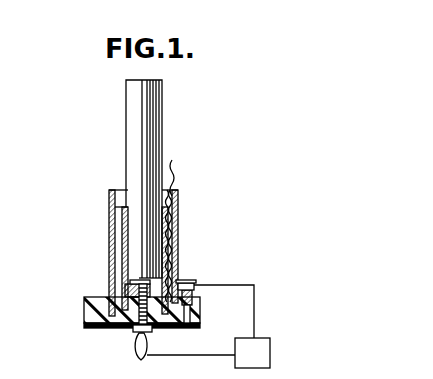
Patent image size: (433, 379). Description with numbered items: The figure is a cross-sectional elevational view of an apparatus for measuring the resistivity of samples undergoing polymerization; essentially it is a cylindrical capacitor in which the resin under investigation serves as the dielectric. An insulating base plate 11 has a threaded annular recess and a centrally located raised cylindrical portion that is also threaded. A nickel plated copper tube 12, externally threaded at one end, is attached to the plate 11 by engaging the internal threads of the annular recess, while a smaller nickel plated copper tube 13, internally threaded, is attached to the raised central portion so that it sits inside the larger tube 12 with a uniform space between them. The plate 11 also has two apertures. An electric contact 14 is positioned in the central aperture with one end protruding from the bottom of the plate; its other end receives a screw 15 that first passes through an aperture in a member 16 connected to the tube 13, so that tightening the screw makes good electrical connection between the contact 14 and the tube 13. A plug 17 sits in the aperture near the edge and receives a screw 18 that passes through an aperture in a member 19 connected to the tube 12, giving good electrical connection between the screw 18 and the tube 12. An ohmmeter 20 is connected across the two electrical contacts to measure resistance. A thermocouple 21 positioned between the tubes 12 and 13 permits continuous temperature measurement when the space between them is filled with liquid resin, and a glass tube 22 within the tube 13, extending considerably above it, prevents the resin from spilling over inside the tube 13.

The insulating base plate 11 is at (84, 305).
The nickel plated copper tube 12 is at (109, 243).
The nickel plated copper tube 13 is at (164, 272).
The electric contact 14 is at (136, 325).
The screw 15 is at (140, 281).
The member 16 is at (133, 284).
The plug 17 is at (197, 295).
The screw 18 is at (191, 284).
The member 19 is at (180, 282).
The ohmmeter 20 is at (265, 355).
The thermocouple 21 is at (172, 163).
The glass tube 22 is at (127, 97).